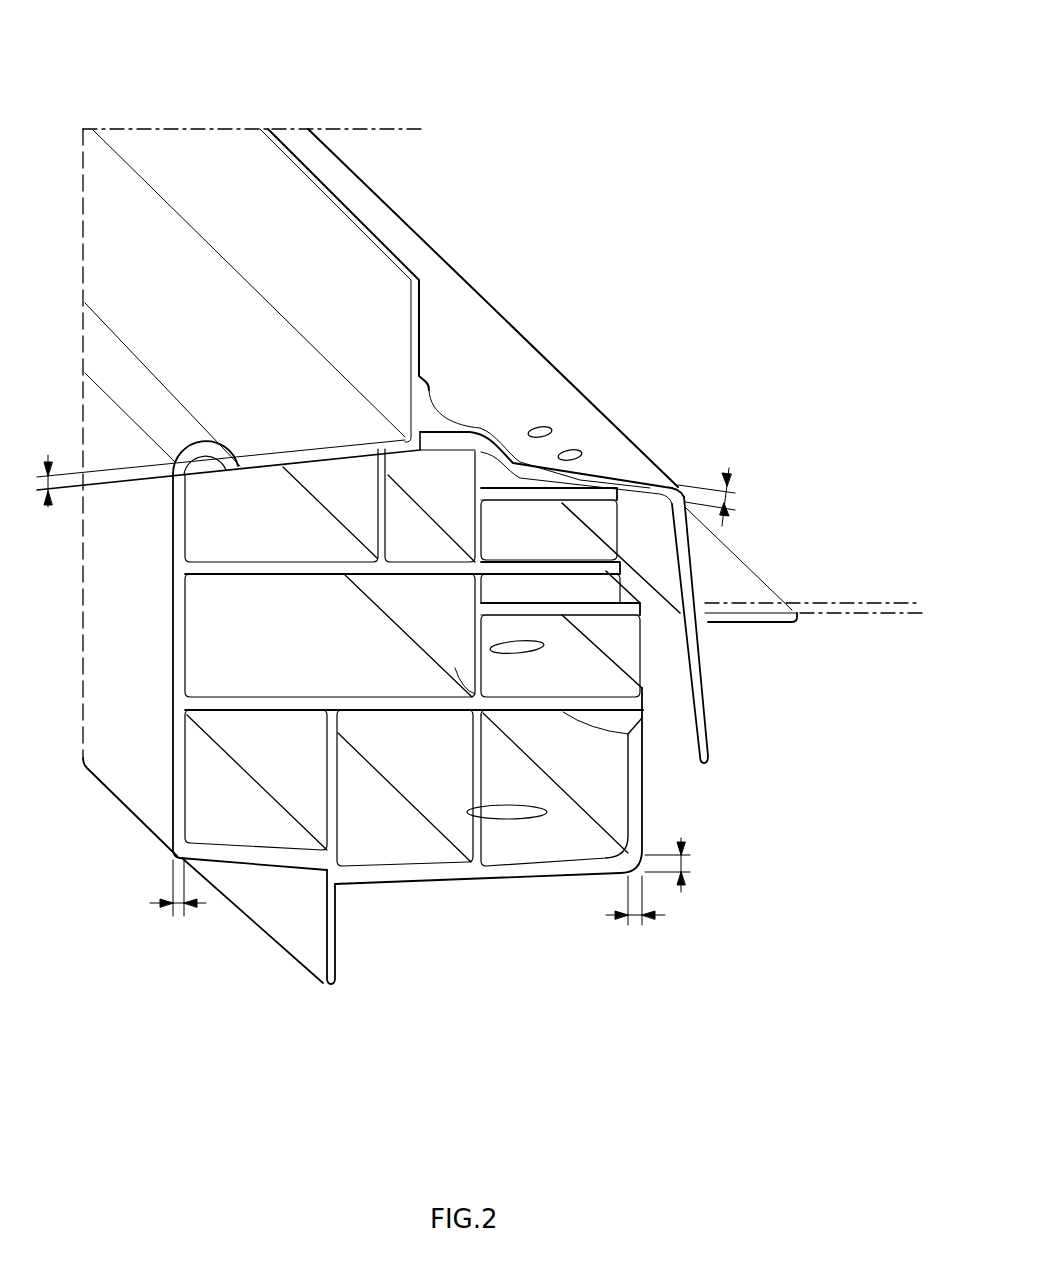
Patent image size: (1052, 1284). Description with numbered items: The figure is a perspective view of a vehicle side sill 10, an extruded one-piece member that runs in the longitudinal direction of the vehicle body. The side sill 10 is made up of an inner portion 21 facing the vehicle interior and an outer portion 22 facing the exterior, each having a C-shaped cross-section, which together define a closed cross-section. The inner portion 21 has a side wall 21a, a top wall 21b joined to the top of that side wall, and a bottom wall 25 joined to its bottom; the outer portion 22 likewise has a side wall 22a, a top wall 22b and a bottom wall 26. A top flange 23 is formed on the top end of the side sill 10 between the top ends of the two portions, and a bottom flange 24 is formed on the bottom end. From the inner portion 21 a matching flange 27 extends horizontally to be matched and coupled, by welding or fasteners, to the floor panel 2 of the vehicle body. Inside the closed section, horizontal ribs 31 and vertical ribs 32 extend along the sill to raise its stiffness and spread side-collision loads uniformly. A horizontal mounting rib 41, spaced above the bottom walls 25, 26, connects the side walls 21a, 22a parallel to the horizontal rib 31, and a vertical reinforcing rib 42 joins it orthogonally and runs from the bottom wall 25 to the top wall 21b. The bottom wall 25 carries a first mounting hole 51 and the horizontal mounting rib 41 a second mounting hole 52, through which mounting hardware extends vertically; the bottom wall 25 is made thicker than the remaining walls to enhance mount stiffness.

The side sill 10 is at (142, 27).
The floor panel 2 is at (886, 616).
The inner portion 21 is at (574, 501).
The side wall 21a is at (645, 800).
The top wall 21b is at (613, 470).
The outer portion 22 is at (225, 580).
The side wall 22a is at (178, 796).
The top wall 22b is at (302, 458).
The top flange 23 is at (276, 172).
The bottom flange 24 is at (298, 935).
The bottom wall 25 is at (568, 880).
The bottom wall 26 is at (260, 858).
The matching flange 27 is at (763, 622).
The horizontal rib 31 is at (573, 567).
The vertical rib 32 is at (378, 482).
The horizontal mounting rib 41 is at (635, 740).
The reinforcing rib 42 is at (460, 670).
The first mounting hole 51 is at (508, 818).
The second mounting hole 52 is at (520, 648).